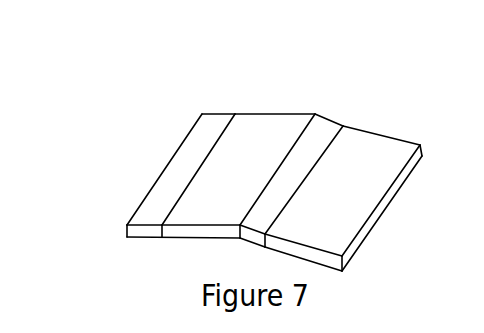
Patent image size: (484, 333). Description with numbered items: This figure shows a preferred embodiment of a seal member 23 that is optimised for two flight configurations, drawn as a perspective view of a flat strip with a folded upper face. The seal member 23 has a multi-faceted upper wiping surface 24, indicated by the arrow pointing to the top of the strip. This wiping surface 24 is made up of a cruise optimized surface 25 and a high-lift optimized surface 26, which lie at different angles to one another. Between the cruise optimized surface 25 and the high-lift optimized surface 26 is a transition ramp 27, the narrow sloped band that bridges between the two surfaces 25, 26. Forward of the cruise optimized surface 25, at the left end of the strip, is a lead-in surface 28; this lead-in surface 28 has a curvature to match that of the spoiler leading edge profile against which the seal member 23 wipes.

The seal member 23 is at (190, 228).
The multi-faceted upper wiping surface 24 is at (261, 98).
The cruise optimized surface 25 is at (245, 125).
The high-lift optimized surface 26 is at (370, 162).
The transition ramp 27 is at (314, 135).
The lead-in surface 28 is at (165, 187).